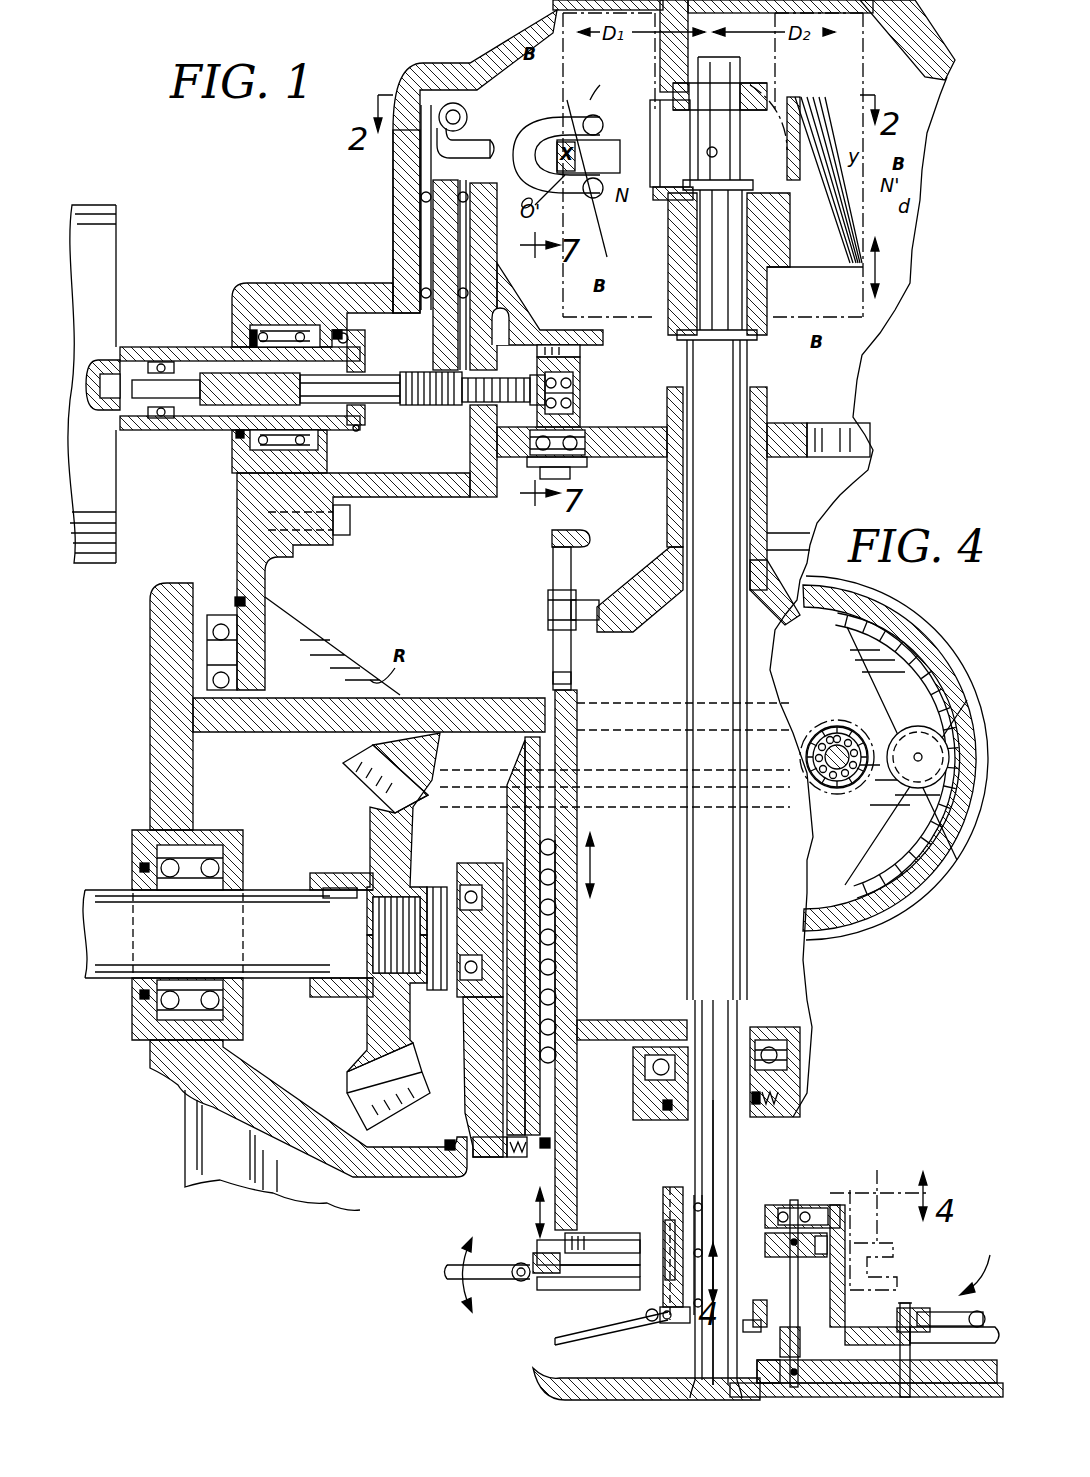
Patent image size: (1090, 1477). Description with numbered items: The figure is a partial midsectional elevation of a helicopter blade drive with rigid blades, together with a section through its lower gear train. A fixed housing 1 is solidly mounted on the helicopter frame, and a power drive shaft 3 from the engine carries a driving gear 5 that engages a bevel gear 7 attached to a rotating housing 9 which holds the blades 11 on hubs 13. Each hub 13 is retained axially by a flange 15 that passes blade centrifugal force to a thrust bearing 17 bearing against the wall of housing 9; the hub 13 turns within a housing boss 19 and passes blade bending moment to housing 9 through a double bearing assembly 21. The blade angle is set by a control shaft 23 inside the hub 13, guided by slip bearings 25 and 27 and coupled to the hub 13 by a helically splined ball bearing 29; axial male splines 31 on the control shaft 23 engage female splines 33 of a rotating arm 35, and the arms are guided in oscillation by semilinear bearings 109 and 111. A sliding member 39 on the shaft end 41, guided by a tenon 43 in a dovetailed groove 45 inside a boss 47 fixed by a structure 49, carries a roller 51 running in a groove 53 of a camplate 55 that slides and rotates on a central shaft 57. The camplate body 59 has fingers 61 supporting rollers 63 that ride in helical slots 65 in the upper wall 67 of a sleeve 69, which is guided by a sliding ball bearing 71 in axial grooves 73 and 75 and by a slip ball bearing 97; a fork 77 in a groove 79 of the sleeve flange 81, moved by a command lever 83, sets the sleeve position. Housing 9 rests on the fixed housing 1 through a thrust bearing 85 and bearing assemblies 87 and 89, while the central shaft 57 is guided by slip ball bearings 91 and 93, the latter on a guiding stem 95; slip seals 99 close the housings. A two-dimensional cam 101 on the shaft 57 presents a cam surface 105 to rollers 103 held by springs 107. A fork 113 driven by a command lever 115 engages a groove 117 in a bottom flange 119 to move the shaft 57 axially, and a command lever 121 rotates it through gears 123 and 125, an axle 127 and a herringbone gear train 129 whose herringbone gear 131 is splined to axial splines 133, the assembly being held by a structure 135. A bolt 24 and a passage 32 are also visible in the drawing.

In FIG. 1, the fixed housing 1 is at (240, 1105).
In FIG. 1, the power drive shaft 3 is at (251, 935).
In FIG. 1, the driving gear 5 is at (355, 1085).
In FIG. 1, the bevel gear 7 is at (355, 768).
In FIG. 1, the rotating housing 9 is at (435, 75).
In FIG. 1, the blade 11 is at (100, 232).
In FIG. 1, the hub 13 is at (160, 347).
In FIG. 1, the flange 15 is at (345, 333).
In FIG. 1, the thrust bearing 17 is at (345, 330).
In FIG. 1, the housing boss 19 is at (270, 300).
In FIG. 1, the double bearing assembly 21 is at (250, 450).
In FIG. 1, the control shaft 23 is at (372, 378).
In FIG. 1, the bolt 24 is at (528, 460).
In FIG. 1, the slip bearing 25 is at (178, 422).
In FIG. 1, the slip bearing 27 is at (357, 432).
In FIG. 1, the helically splined ball bearing 29 is at (252, 330).
In FIG. 1, the axial male splines 31 is at (470, 400).
In FIG. 1, the pipe 32 is at (482, 145).
In FIG. 1, the female splines 33 is at (470, 380).
In FIG. 1, the rotating arm 35 is at (393, 230).
In FIG. 1, the sliding member 39 is at (580, 407).
In FIG. 1, the end of control shaft 41 is at (575, 385).
In FIG. 1, the tenon 43 is at (580, 367).
In FIG. 1, the dovetailed groove 45 is at (580, 351).
In FIG. 1, the boss 47 is at (590, 332).
In FIG. 1, the structure 49 is at (462, 492).
In FIG. 1, the roller 51 is at (590, 455).
In FIG. 1, the groove 53 is at (615, 450).
In FIG. 1, the camplate 55 is at (795, 423).
In FIG. 1, the central shaft 57 is at (717, 727).
In FIG. 4, the central shaft 57 is at (838, 725).
In FIG. 1, the camplate body 59 is at (660, 600).
In FIG. 1, the fingers 61 is at (588, 620).
In FIG. 1, the rollers 63 is at (548, 625).
In FIG. 1, the slots 65 is at (552, 678).
In FIG. 1, the upper wall 67 is at (552, 572).
In FIG. 1, the sleeve 69 is at (575, 940).
In FIG. 4, the sleeve 69 is at (897, 905).
In FIG. 1, the sliding ball bearing 71 is at (560, 905).
In FIG. 1, the axial groove 73 is at (560, 826).
In FIG. 1, the axial groove 75 is at (525, 808).
In FIG. 1, the fork 77 is at (525, 1262).
In FIG. 1, the groove 79 is at (885, 1265).
In FIG. 1, the flange 81 is at (548, 1278).
In FIG. 1, the command lever 83 is at (462, 1270).
In FIG. 1, the thrust bearing 85 is at (515, 1150).
In FIG. 1, the bearing assembly 87 is at (470, 985).
In FIG. 1, the bearing assembly 89 is at (240, 680).
In FIG. 1, the slip ball bearing 91 is at (718, 142).
In FIG. 1, the slip ball bearing 93 is at (675, 1215).
In FIG. 1, the guiding stem 95 is at (710, 1330).
In FIG. 4, the guiding stem 95 is at (848, 782).
In FIG. 1, the slip ball bearing 97 is at (772, 1048).
In FIG. 1, the slip seals 99 is at (240, 437).
In FIG. 1, the two-dimensional cam 101 is at (855, 225).
In FIG. 1, the rollers 103 is at (590, 128).
In FIG. 1, the cam surface 105 is at (800, 110).
In FIG. 1, the springs 107 is at (465, 108).
In FIG. 1, the semilinear bearing 109 is at (455, 258).
In FIG. 1, the semilinear bearing 111 is at (420, 175).
In FIG. 1, the fork 113 is at (660, 1310).
In FIG. 1, the command lever 115 is at (580, 1338).
In FIG. 1, the groove 117 is at (773, 1303).
In FIG. 1, the flange 119 is at (750, 1330).
In FIG. 1, the command lever 121 is at (950, 1312).
In FIG. 1, the gear 123 is at (866, 1360).
In FIG. 1, the gear 125 is at (757, 1365).
In FIG. 1, the axle 127 is at (798, 1298).
In FIG. 1, the herringbone gear train 129 is at (785, 1257).
In FIG. 4, the herringbone gear train 129 is at (915, 792).
In FIG. 1, the herringbone gear 131 is at (672, 1262).
In FIG. 4, the herringbone gear 131 is at (835, 795).
In FIG. 1, the axial splines 133 is at (790, 1160).
In FIG. 4, the axial splines 133 is at (863, 732).
In FIG. 1, the structure 135 is at (990, 1322).
In FIG. 4, the structure 135 is at (945, 875).